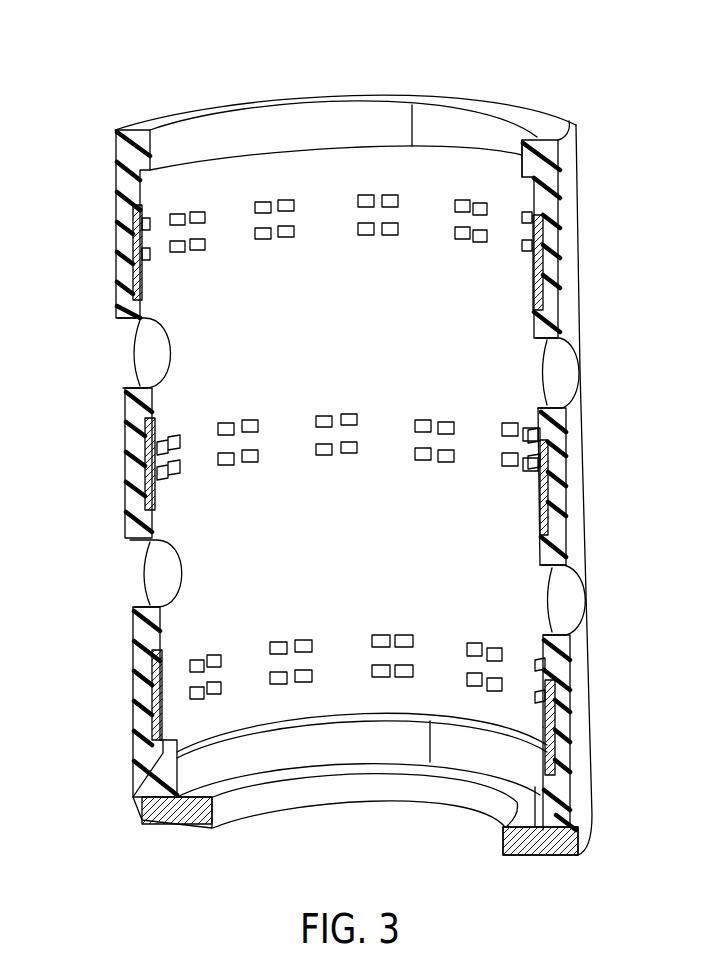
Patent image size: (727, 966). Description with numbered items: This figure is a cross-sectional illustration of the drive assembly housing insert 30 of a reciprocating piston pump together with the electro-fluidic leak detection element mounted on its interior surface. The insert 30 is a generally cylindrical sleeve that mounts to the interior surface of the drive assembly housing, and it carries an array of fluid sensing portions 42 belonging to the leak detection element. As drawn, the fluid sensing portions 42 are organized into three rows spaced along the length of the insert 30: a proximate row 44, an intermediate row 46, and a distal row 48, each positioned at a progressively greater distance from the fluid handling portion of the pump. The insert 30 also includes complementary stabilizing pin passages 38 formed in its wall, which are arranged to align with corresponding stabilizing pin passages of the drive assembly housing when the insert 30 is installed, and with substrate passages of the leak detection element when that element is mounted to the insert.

The drive assembly housing insert 30 is at (578, 190).
The stabilizing pin passages 38 is at (585, 372).
The fluid sensing portions 42 is at (362, 197).
The proximate row 44 is at (118, 243).
The intermediate row 46 is at (122, 472).
The distal row 48 is at (135, 698).